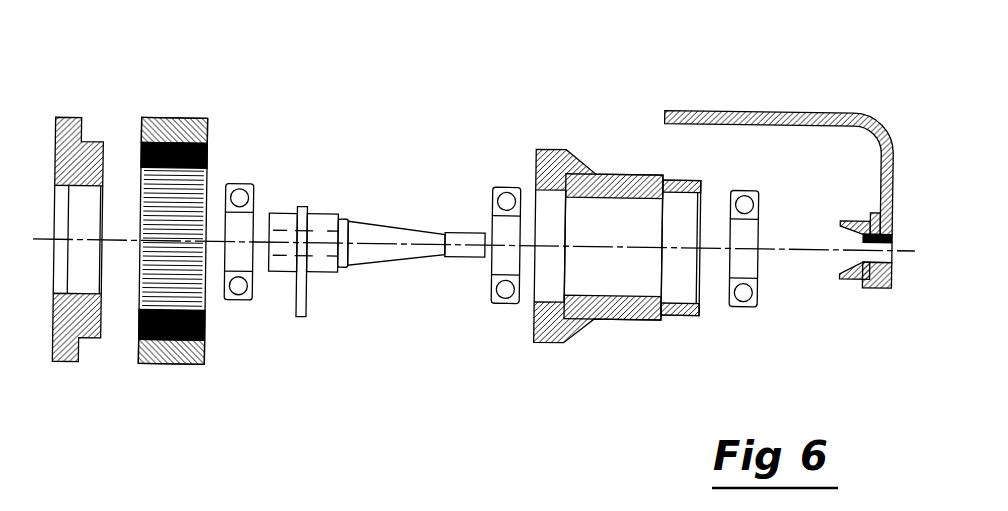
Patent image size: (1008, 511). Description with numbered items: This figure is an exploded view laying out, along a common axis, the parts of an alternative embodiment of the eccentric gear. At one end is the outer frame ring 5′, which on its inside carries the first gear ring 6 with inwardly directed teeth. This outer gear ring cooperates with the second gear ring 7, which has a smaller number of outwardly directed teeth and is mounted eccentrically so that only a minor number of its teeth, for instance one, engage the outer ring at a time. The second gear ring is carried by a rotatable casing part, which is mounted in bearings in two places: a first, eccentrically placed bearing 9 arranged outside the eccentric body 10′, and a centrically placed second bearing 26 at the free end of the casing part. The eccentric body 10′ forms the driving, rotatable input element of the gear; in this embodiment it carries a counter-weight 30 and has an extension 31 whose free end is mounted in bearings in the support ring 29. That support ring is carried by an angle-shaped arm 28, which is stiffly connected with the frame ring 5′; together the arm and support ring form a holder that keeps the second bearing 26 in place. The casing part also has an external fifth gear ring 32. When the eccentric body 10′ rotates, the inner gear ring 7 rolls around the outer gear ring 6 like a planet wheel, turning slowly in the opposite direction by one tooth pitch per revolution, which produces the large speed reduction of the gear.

The frame ring 5′ is at (199, 55).
The first gear ring 6 is at (190, 183).
The second gear ring 7 is at (549, 148).
The bearing 9 is at (498, 307).
The eccentric body 10′ is at (322, 218).
The second bearing 26 is at (738, 192).
The angle-shaped arm 28 is at (778, 112).
The support ring 29 is at (853, 278).
The counter-weight 30 is at (308, 302).
The extension 31 is at (392, 230).
The fifth gear ring 32 is at (678, 317).